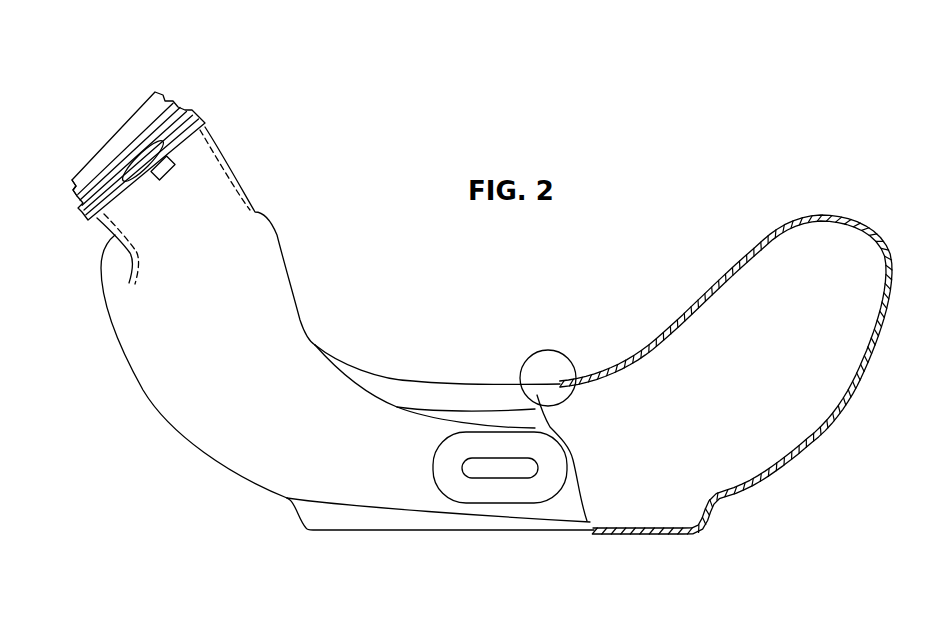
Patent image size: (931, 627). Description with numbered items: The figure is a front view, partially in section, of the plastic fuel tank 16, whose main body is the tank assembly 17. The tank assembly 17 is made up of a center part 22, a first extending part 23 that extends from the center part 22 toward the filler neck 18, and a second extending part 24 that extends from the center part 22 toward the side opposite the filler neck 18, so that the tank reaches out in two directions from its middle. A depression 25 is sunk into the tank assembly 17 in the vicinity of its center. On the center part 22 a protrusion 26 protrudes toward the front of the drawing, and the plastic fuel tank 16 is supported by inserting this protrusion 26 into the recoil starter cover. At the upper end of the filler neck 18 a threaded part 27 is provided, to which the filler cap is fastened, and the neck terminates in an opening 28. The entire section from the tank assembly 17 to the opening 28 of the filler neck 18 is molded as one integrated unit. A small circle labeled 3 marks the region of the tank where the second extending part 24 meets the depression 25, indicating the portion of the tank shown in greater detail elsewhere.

The plastic fuel tank 16 is at (82, 78).
The tank assembly 17 is at (406, 537).
The filler neck 18 is at (146, 93).
The center part 22 is at (490, 534).
The first extending part 23 is at (289, 277).
The second extending part 24 is at (751, 258).
The depression 25 is at (468, 382).
The protrusion 26 is at (535, 506).
The threaded part 27 is at (192, 108).
The opening 28 is at (78, 184).
The detail circle for FIG. 3 is at (560, 352).